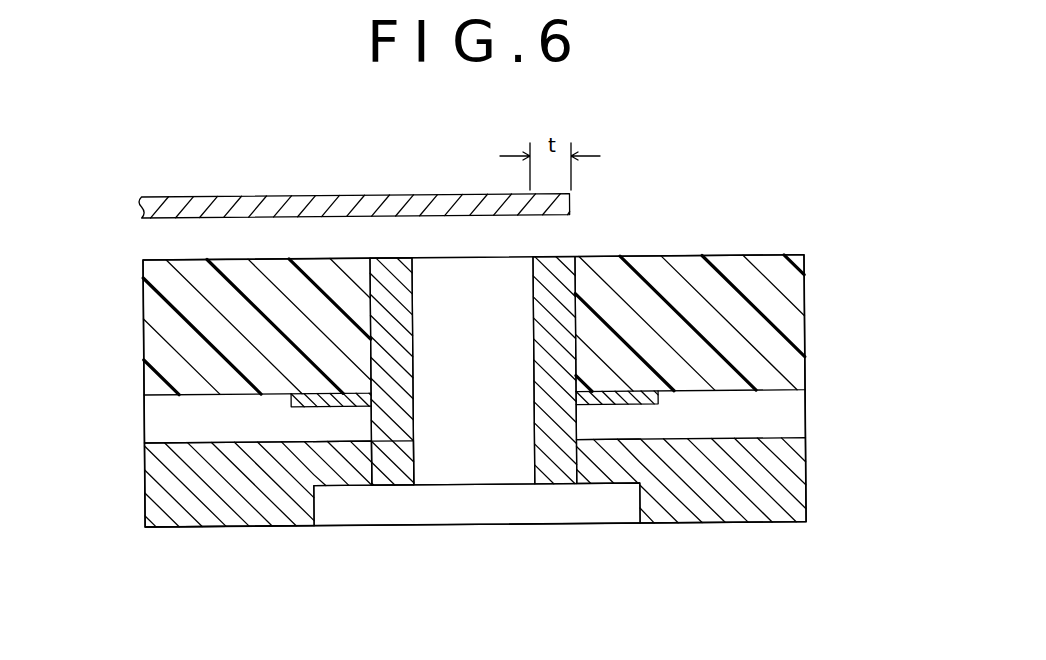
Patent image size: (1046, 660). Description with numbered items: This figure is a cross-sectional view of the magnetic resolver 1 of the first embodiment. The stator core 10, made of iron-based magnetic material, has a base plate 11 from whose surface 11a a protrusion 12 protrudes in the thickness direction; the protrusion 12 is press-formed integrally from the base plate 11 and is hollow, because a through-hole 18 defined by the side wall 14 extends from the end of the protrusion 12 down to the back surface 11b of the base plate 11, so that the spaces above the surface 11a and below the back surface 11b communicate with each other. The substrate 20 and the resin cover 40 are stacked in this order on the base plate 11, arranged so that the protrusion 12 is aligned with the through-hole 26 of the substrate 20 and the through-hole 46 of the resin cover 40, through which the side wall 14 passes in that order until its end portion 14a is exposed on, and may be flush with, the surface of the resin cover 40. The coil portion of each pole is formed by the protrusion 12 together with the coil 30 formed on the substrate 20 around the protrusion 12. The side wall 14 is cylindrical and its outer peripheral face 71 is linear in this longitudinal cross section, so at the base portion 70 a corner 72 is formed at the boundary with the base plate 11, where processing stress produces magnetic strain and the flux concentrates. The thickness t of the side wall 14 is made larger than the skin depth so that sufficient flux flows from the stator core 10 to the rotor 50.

The magnetic resolver 1 is at (834, 172).
The stator core 10 is at (762, 480).
The base plate 11 is at (232, 488).
The surface of the base plate 11a is at (187, 443).
The back surface of the base plate 11b is at (178, 528).
The protrusion 12 is at (400, 318).
The side wall 14 is at (391, 263).
The end portion of the side wall 14a is at (407, 262).
The through-hole 18 is at (458, 453).
The substrate 20 is at (760, 418).
The through-hole of the substrate 26 is at (575, 430).
The coil 30 is at (660, 404).
The resin cover 40 is at (760, 328).
The through-hole of the resin cover 46 is at (567, 312).
The rotor 50 is at (327, 204).
The base portion of the side wall 70 is at (403, 460).
The outer peripheral face of the side wall 71 is at (370, 425).
The corner 72 is at (338, 442).